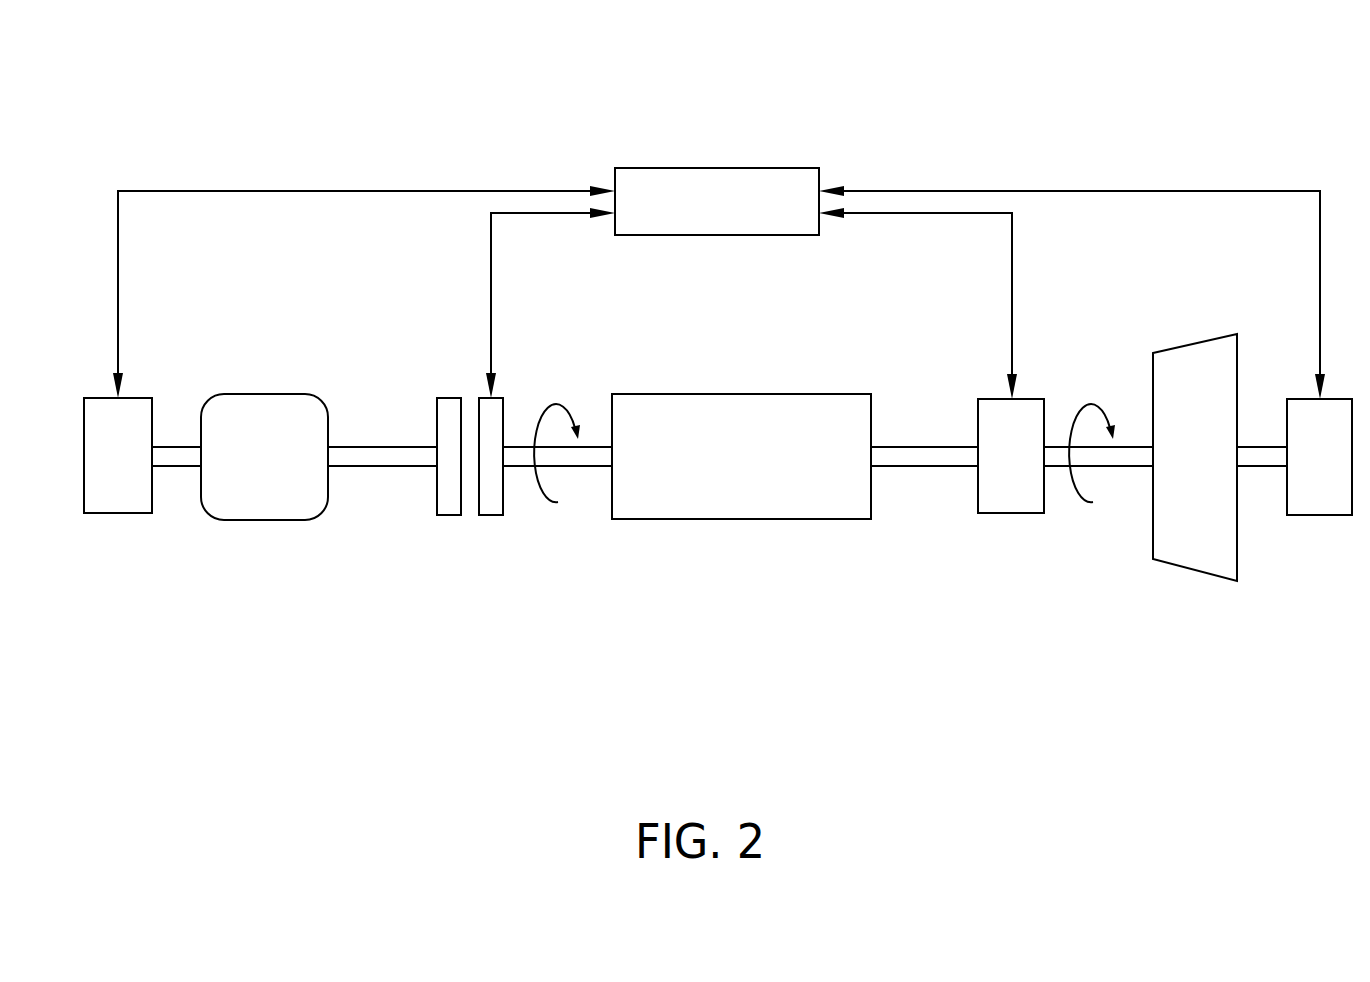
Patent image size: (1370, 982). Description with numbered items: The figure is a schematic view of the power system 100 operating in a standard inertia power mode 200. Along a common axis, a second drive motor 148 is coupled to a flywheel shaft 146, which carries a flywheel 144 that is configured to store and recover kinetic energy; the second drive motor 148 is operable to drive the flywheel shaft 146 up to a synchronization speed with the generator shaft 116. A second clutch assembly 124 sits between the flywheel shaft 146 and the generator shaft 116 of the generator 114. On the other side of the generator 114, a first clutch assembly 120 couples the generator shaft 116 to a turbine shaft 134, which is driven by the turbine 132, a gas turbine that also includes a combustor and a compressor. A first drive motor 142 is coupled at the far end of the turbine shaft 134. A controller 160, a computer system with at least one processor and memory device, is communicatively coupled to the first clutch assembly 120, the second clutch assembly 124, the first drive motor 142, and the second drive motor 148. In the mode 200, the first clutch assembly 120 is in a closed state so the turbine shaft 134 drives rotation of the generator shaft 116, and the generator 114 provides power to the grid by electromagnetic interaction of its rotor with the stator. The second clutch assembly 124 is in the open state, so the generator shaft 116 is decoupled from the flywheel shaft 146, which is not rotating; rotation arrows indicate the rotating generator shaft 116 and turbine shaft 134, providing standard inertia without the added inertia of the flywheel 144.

The power system 100 is at (1206, 120).
The generator 114 is at (707, 474).
The generator shaft 116 is at (924, 467).
The first clutch assembly 120 is at (959, 372).
The second clutch assembly 124 is at (409, 365).
The turbine 132 is at (1170, 474).
The turbine shaft 134 is at (1058, 467).
The first drive motor 142 is at (1341, 474).
The flywheel 144 is at (235, 474).
The flywheel shaft 146 is at (370, 467).
The second drive motor 148 is at (141, 474).
The controller 160 is at (696, 230).
The standard inertia power mode 200 is at (1072, 314).